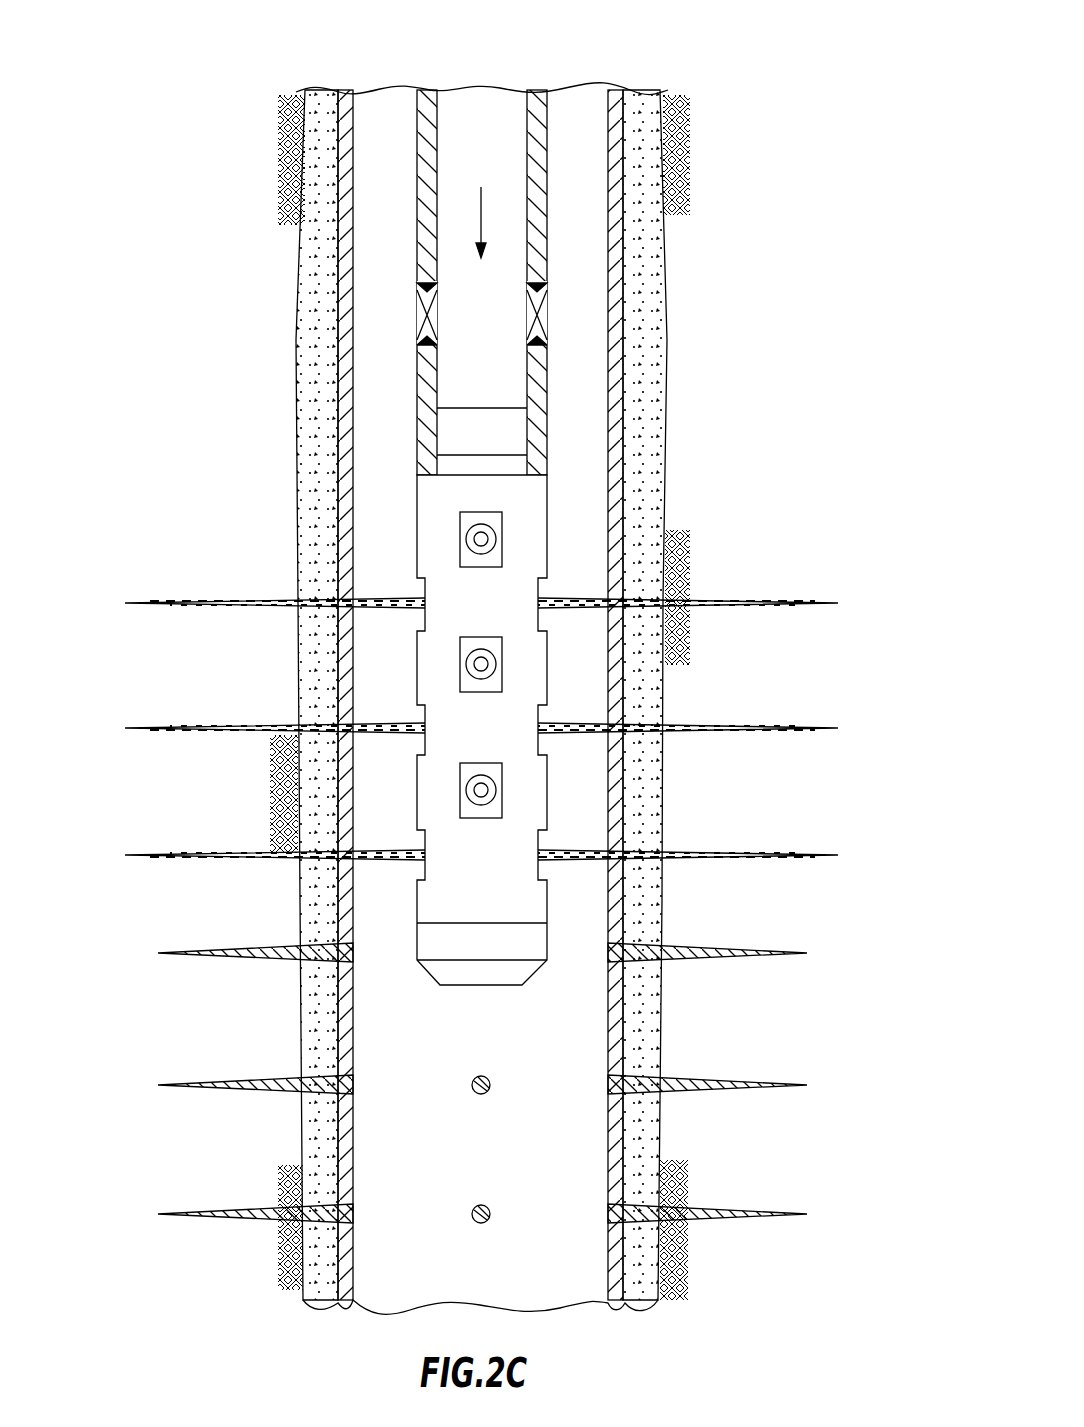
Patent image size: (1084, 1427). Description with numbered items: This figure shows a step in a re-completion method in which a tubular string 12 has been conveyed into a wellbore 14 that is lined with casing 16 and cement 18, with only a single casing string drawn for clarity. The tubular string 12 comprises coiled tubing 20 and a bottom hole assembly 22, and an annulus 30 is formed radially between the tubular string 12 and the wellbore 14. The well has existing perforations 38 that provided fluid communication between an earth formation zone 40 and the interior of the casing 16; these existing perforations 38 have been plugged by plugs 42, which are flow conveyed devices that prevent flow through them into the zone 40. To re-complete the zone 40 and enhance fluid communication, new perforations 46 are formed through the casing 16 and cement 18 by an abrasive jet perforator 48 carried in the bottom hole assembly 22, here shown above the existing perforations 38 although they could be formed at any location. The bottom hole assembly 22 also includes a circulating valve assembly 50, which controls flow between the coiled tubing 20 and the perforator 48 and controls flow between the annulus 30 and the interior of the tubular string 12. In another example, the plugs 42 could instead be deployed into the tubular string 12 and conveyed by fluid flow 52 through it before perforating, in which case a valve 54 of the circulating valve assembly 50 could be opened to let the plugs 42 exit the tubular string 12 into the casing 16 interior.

The tubular string 12 is at (557, 176).
The wellbore 14 is at (298, 481).
The casing 16 is at (338, 302).
The cement 18 is at (665, 247).
The coiled tubing 20 is at (414, 113).
The bottom hole assembly 22 is at (417, 517).
The annulus 30 is at (375, 263).
The existing perforations 38 is at (200, 957).
The earth formation zone 40 is at (853, 1104).
The plugs 42 is at (357, 1083).
The new perforations 46 is at (757, 602).
The abrasive jet perforator 48 is at (547, 655).
The circulating valve assembly 50 is at (547, 378).
The fluid flow 52 is at (483, 203).
The valve 54 is at (433, 318).